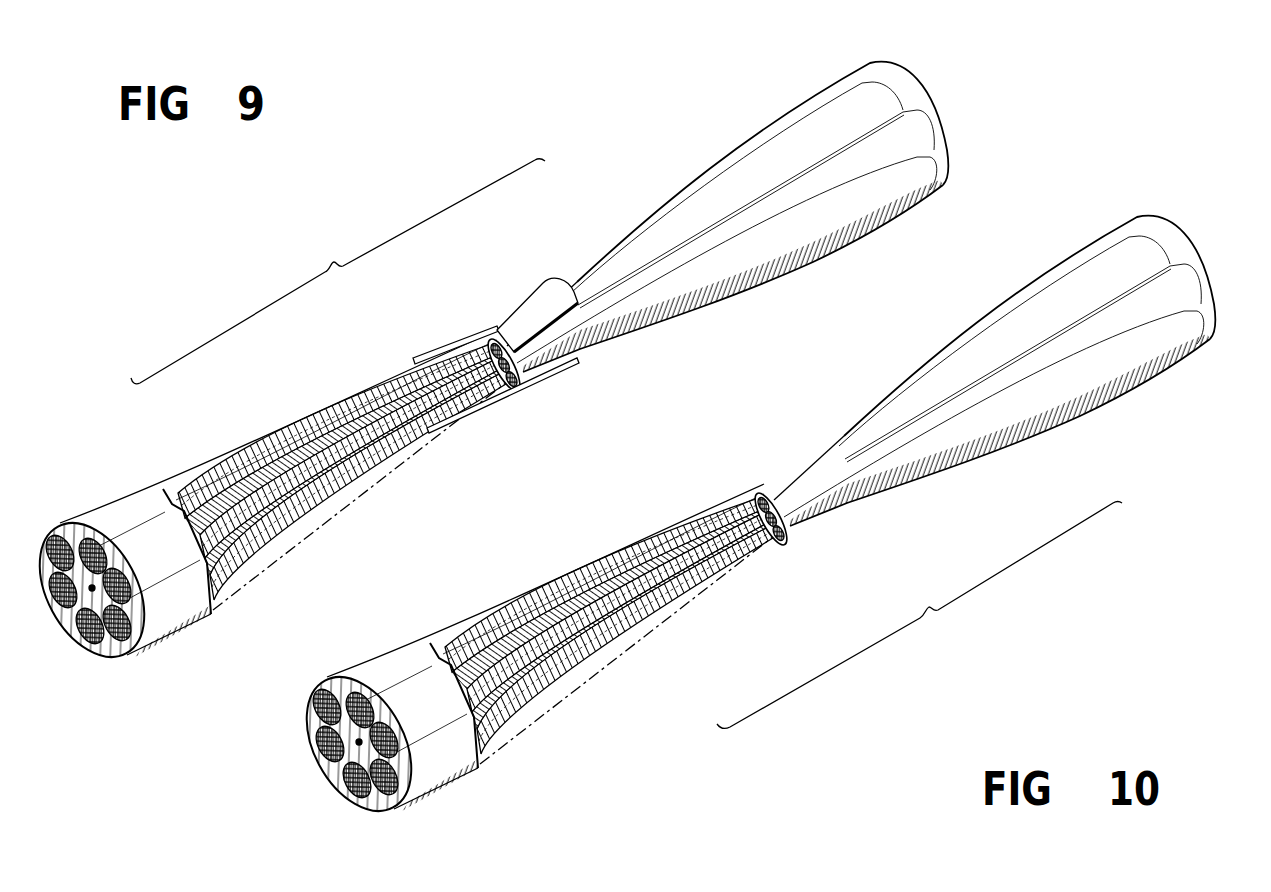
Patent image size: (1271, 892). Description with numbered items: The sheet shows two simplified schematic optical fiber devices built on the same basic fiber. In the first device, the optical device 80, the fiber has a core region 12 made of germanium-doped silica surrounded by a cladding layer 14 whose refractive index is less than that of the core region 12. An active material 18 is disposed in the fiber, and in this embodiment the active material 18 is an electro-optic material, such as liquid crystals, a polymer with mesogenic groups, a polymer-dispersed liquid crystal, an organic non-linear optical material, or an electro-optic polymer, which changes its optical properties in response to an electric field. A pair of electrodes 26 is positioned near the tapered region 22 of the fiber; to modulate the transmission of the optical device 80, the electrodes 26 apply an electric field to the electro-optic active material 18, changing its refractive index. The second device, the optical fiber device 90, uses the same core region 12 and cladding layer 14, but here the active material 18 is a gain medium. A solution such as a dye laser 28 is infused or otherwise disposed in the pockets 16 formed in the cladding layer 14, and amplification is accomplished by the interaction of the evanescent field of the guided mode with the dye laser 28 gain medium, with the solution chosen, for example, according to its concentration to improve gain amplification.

In FIG. 9, the core region 12 is at (303, 505).
In FIG. 10, the core region 12 is at (570, 660).
In FIG. 9, the cladding layer 14 is at (403, 387).
In FIG. 10, the cladding layer 14 is at (706, 520).
In FIG. 9, the pockets 16 is at (352, 420).
In FIG. 10, the pockets 16 is at (647, 567).
In FIG. 9, the active material 18 is at (335, 480).
In FIG. 9, the tapered region 22 is at (338, 271).
In FIG. 10, the tapered region 22 is at (919, 615).
In FIG. 9, the electrodes 26 is at (500, 317).
In FIG. 10, the dye laser 28 is at (585, 625).
In FIG. 9, the optical device 80 is at (483, 368).
In FIG. 10, the optical fiber device 90 is at (750, 522).